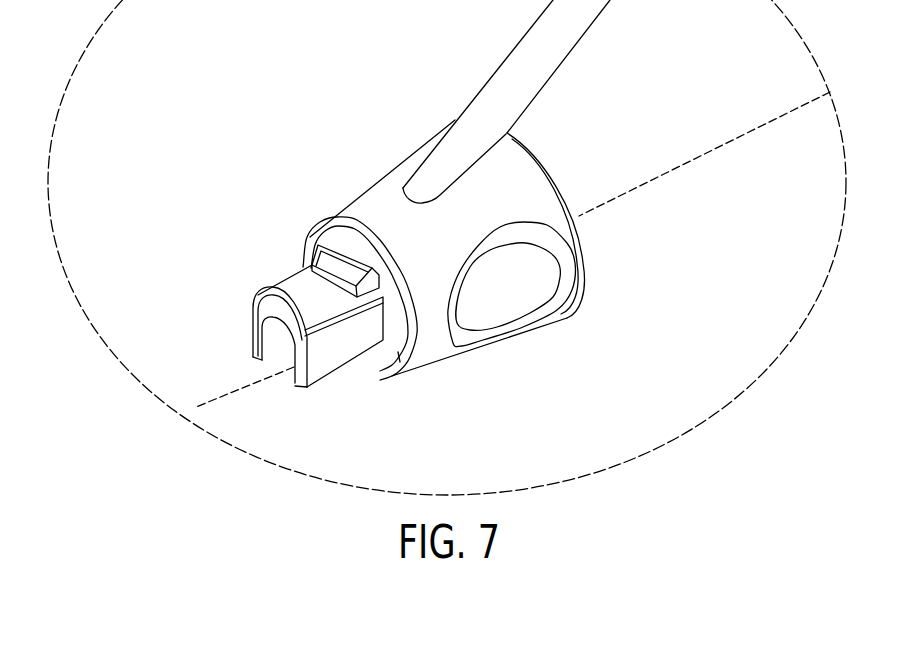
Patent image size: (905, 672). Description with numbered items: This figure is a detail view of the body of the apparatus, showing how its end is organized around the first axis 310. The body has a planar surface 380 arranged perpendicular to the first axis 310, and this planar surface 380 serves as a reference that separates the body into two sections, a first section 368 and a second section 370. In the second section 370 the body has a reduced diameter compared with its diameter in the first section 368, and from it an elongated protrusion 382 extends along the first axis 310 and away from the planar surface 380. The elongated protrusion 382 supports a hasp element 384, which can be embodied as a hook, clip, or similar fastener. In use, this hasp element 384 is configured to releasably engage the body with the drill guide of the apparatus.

The first axis 310 is at (662, 177).
The first section 368 is at (456, 116).
The second section 370 is at (174, 249).
The planar surface 380 is at (386, 377).
The elongated protrusion 382 is at (403, 426).
The hasp element 384 is at (327, 238).